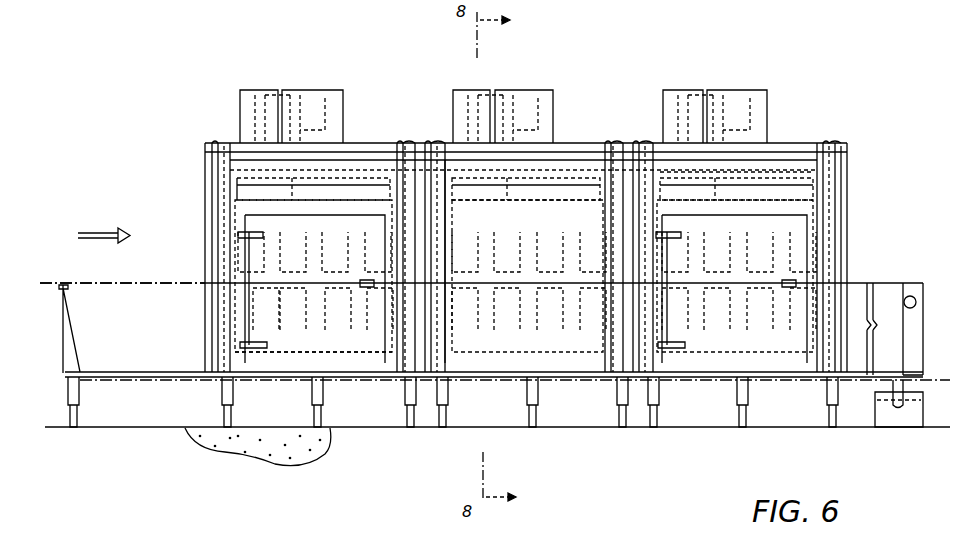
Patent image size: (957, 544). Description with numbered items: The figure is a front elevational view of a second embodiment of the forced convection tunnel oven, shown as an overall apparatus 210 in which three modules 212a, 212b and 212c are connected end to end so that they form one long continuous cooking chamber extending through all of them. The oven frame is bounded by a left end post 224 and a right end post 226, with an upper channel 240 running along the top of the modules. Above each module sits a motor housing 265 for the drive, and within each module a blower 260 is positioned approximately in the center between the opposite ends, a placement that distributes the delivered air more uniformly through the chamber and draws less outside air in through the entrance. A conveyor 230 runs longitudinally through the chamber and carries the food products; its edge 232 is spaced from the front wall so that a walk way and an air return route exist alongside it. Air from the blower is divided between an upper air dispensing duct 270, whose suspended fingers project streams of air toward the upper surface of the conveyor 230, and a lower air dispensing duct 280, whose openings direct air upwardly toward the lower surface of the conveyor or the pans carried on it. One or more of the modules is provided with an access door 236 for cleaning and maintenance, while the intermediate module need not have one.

The conveyor / treating apparatus 210 is at (114, 270).
The module 212a is at (395, 143).
The module 212b is at (598, 143).
The module 212c is at (815, 143).
The left end post 224 is at (205, 170).
The right end post 226 is at (847, 210).
The conveyor 230 is at (923, 283).
The edge of the conveyor 232 is at (885, 418).
The access door 236 is at (313, 357).
The upper channel 240 is at (795, 194).
The blower 260 is at (205, 191).
The drive motor housing 265 is at (318, 90).
The upper air dispensing duct 270 is at (295, 268).
The lower air dispensing duct 280 is at (290, 310).